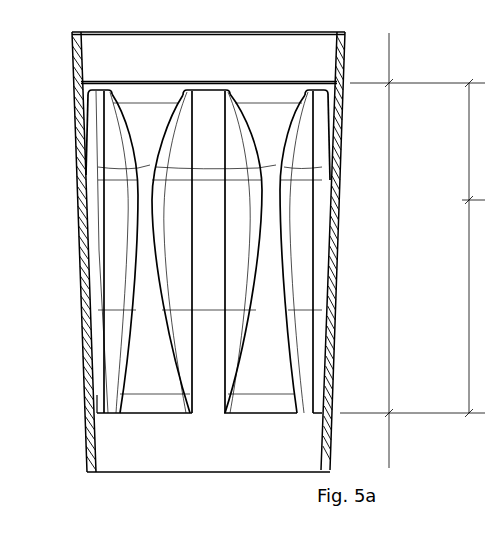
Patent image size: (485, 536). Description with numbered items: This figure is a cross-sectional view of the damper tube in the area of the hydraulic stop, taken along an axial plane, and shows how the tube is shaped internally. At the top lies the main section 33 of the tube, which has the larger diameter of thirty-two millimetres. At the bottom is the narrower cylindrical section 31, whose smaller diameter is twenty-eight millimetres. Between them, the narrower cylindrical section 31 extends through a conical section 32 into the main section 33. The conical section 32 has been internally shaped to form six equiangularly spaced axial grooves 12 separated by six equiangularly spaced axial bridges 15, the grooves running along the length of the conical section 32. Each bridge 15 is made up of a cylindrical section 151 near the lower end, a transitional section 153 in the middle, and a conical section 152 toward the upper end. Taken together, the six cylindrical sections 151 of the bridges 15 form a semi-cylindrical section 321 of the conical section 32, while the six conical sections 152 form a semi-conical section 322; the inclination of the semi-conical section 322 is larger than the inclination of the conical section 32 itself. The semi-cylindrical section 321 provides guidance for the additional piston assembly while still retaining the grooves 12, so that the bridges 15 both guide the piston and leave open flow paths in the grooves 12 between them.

The axial grooves 12 is at (262, 122).
The bridges 15 is at (304, 386).
The cylindrical section 151 is at (307, 327).
The conical section 152 is at (307, 153).
The transitional section 153 is at (307, 190).
The narrower cylindrical section 31 is at (389, 448).
The conical section 32 is at (389, 320).
The semi-cylindrical section 321 is at (468, 265).
The semi-conical section 322 is at (468, 149).
The main section 33 is at (389, 67).